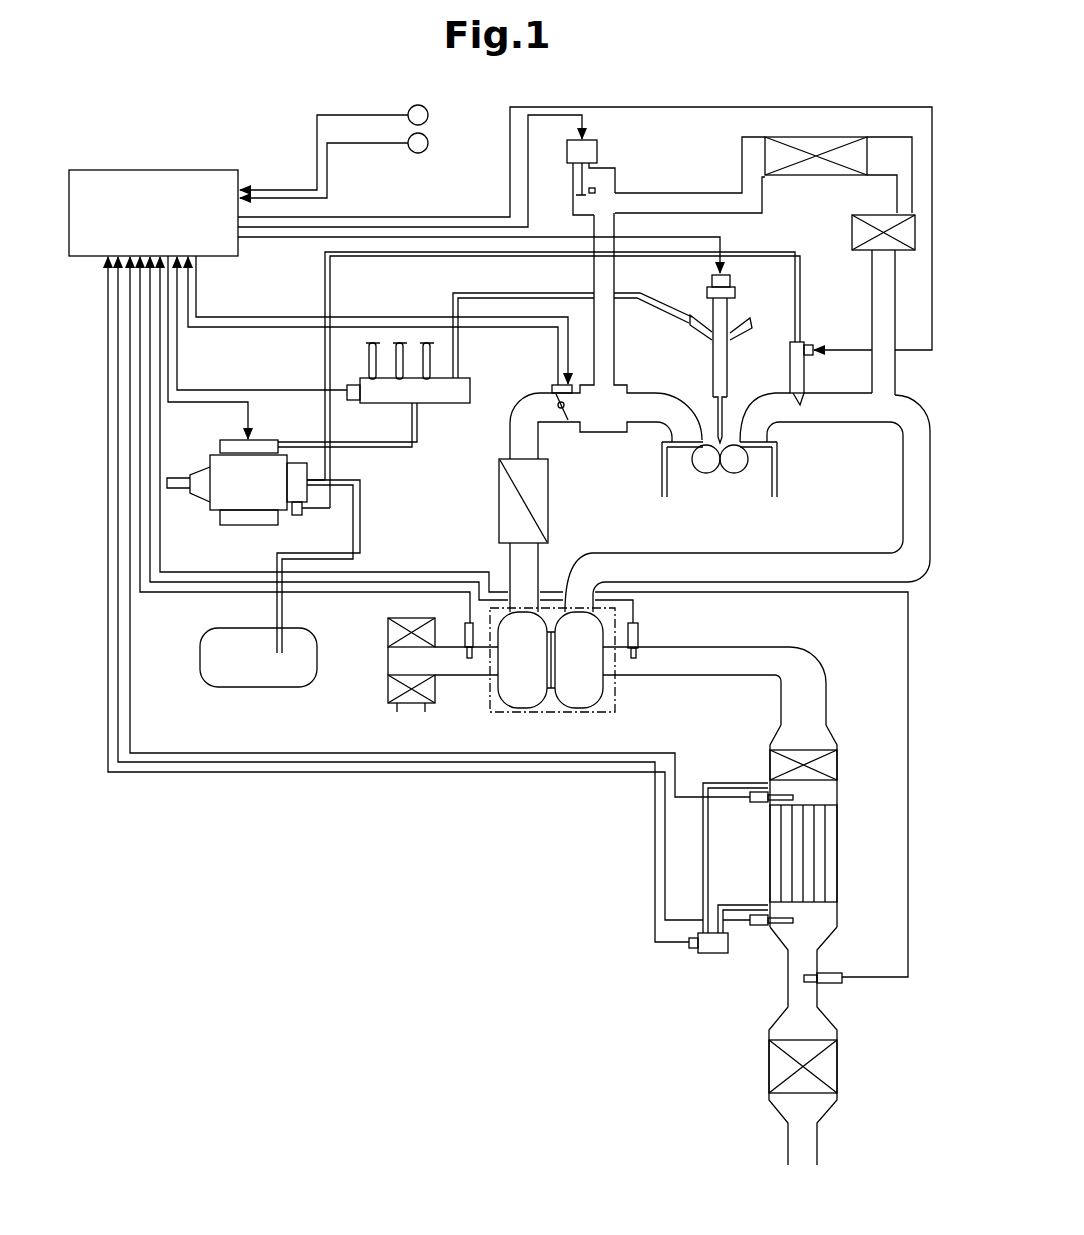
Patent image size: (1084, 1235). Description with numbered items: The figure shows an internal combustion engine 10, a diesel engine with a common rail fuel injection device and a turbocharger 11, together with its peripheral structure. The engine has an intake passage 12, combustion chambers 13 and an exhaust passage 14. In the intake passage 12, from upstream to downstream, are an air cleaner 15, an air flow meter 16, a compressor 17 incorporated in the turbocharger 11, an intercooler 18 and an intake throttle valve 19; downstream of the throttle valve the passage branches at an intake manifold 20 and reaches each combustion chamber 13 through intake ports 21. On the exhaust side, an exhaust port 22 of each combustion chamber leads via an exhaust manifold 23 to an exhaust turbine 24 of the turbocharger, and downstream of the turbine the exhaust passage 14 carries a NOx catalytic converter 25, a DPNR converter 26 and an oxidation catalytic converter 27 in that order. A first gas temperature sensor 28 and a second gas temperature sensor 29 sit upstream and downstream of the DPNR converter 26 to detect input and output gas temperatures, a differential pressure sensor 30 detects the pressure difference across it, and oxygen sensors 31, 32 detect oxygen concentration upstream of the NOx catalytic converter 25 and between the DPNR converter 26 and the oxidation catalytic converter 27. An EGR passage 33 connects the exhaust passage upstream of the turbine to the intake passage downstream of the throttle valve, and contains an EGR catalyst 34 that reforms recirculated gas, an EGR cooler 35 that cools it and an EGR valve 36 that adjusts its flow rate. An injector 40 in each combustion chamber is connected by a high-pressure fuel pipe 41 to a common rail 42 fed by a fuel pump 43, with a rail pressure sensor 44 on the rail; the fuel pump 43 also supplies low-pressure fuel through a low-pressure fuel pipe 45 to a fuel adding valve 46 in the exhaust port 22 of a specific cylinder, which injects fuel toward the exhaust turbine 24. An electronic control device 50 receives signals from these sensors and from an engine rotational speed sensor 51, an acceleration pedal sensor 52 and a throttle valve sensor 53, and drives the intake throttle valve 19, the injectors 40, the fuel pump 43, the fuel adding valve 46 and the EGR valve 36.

The internal combustion engine 10 is at (660, 479).
The turbocharger 11 is at (490, 712).
The intake passage 12 is at (550, 460).
The combustion chambers 13 is at (708, 470).
The exhaust passage 14 is at (900, 505).
The air cleaner 15 is at (388, 684).
The air flow meter 16 is at (458, 632).
The compressor 17 is at (520, 710).
The intercooler 18 is at (499, 524).
The intake throttle valve 19 is at (566, 424).
The intake manifold 20 is at (646, 393).
The intake ports 21 is at (660, 436).
The exhaust port 22 is at (780, 432).
The exhaust manifold 23 is at (200, 663).
The exhaust turbine 24 is at (578, 710).
The NOx catalytic converter 25 is at (832, 766).
The DPNR converter 26 is at (830, 850).
The oxidation catalytic converter 27 is at (832, 1068).
The first gas temperature sensor 28 is at (752, 805).
The second gas temperature sensor 29 is at (755, 928).
The differential pressure sensor 30 is at (712, 956).
The oxygen sensor 31 is at (640, 632).
The oxygen sensor 32 is at (828, 985).
The EGR passage 33 is at (690, 185).
The EGR catalyst 34 is at (852, 232).
The EGR cooler 35 is at (788, 178).
The EGR valve 36 is at (598, 143).
The injector 40 is at (706, 303).
The high-pressure fuel pipe 41 is at (486, 284).
The common rail 42 is at (438, 405).
The fuel pump 43 is at (215, 528).
The rail pressure sensor 44 is at (352, 402).
The low-pressure fuel pipe 45 is at (395, 256).
The fuel adding valve 46 is at (788, 360).
The electronic control device 50 is at (206, 170).
The engine rotational speed sensor 51 is at (430, 113).
The acceleration pedal sensor 52 is at (430, 141).
The throttle valve sensor 53 is at (552, 388).